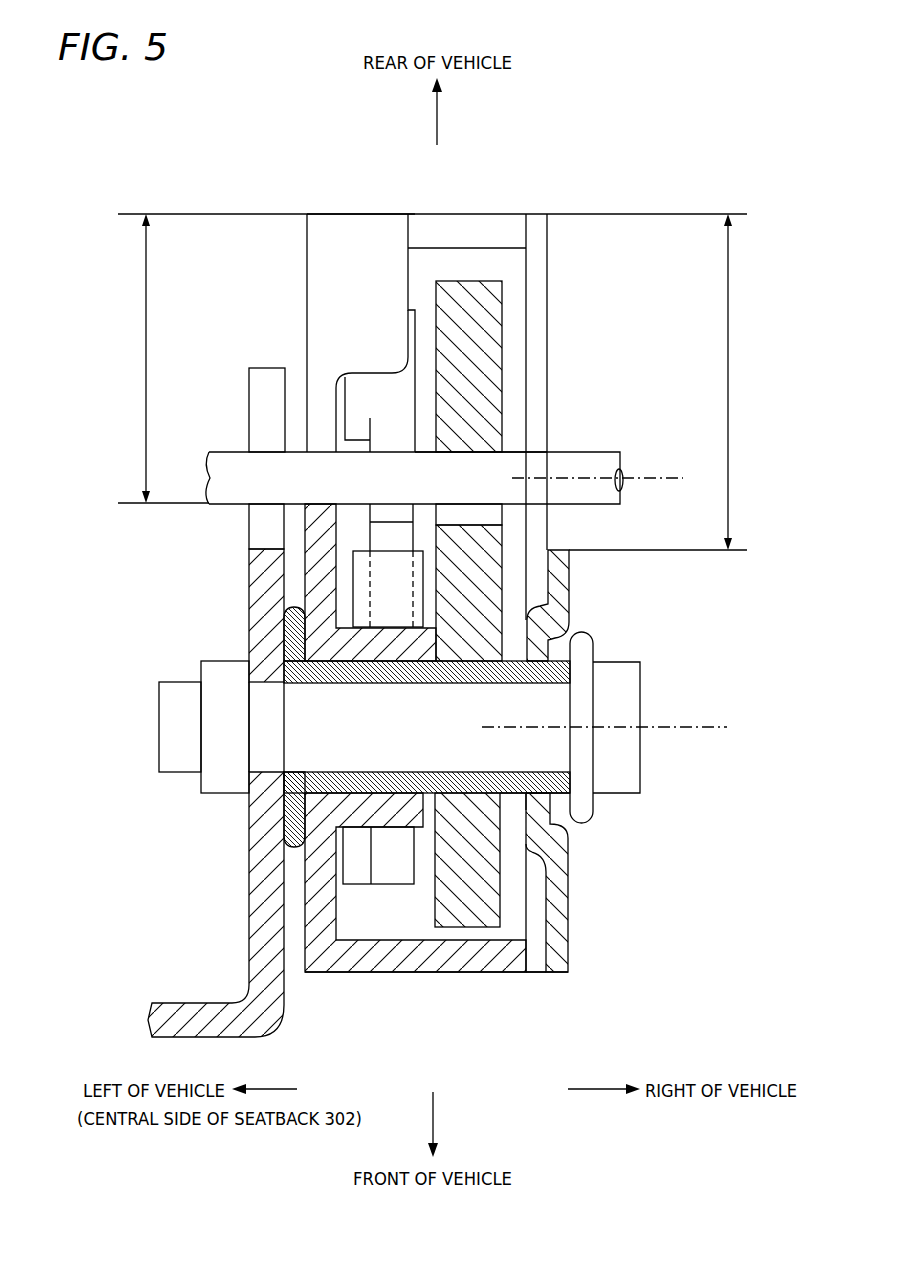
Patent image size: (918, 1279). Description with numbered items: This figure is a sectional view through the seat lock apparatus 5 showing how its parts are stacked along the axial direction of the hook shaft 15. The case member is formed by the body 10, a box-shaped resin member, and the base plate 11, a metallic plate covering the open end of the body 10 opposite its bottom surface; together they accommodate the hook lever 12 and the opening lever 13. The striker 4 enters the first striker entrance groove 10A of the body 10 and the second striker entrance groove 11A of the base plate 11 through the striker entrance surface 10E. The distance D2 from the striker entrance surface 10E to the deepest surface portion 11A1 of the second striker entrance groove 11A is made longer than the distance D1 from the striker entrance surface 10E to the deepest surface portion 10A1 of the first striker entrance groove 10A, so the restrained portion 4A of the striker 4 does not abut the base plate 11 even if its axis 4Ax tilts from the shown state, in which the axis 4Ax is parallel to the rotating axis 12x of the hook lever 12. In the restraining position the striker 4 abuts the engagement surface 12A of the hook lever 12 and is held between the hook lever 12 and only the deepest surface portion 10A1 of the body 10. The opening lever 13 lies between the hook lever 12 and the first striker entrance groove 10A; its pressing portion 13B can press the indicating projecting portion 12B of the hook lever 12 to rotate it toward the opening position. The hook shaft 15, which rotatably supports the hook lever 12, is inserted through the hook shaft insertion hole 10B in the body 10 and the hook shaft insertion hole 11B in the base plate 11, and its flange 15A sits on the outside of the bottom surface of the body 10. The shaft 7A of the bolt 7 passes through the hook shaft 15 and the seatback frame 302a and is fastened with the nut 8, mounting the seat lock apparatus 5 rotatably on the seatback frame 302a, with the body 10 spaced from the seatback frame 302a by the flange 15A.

The striker 4 is at (237, 452).
The restrained portion 4A is at (425, 470).
The axis 4Ax is at (665, 469).
The seat lock apparatus 5 is at (553, 984).
The bolt 7 is at (636, 712).
The shaft 7A is at (528, 702).
The nut 8 is at (220, 796).
The body 10 is at (453, 973).
The first striker entrance groove 10A is at (323, 274).
The deepest surface portion 10A1 is at (322, 478).
The hook shaft insertion hole 10B is at (284, 795).
The striker entrance surface 10E is at (358, 214).
The base plate 11 is at (568, 920).
The second striker entrance groove 11A is at (541, 316).
The deepest surface portion 11A1 is at (569, 550).
The hook shaft insertion hole 11B is at (535, 798).
The hook lever 12 is at (490, 281).
The engagement surface 12A is at (468, 453).
The indicating projecting portion 12B is at (347, 593).
The rotating axis 12x is at (720, 724).
The opening lever 13 is at (420, 473).
The pressing portion 13B is at (353, 573).
The hook shaft 15 is at (527, 848).
The flange 15A is at (283, 828).
The seatback frame 302a is at (284, 990).
The distance D1 is at (158, 358).
The distance D2 is at (666, 382).